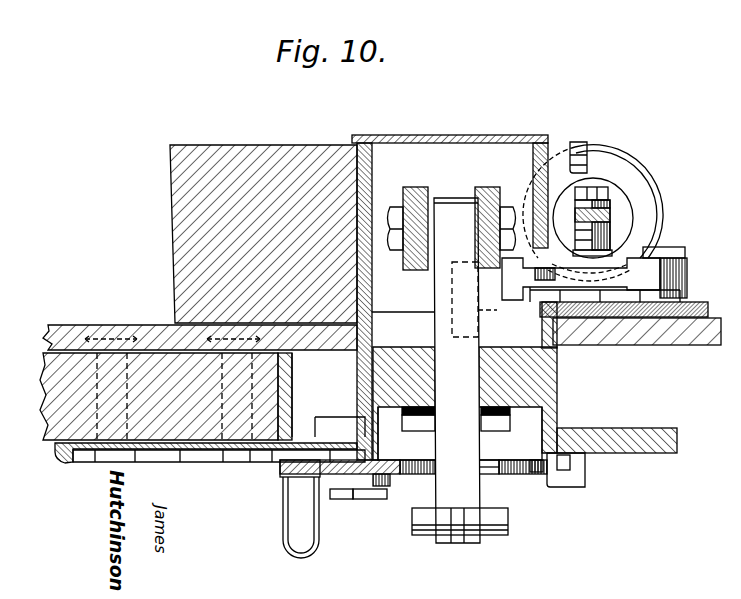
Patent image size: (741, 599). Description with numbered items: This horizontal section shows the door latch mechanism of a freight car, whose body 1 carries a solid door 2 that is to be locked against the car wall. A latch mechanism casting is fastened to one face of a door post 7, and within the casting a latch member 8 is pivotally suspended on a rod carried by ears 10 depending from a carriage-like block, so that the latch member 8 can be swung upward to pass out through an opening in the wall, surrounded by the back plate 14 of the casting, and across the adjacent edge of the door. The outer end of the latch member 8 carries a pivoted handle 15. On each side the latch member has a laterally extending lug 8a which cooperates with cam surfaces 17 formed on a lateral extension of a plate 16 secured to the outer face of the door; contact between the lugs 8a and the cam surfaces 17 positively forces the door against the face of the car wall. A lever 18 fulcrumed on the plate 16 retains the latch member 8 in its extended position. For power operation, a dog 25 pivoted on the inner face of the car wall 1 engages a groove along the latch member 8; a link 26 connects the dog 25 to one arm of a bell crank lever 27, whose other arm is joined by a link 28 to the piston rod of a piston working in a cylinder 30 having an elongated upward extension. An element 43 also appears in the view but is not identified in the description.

The body of the freight car 1 is at (62, 333).
The solid door 2 is at (188, 451).
The door post 7 is at (226, 145).
The latch member 8 is at (457, 370).
The laterally extending lug 8a is at (413, 424).
The ears 10 is at (416, 189).
The back plate 14 is at (468, 135).
The handle 15 is at (426, 530).
The plate 16 is at (275, 452).
The cam surfaces 17 is at (556, 390).
The lever 18 is at (290, 509).
The dog 25 is at (477, 299).
The link 26 is at (622, 262).
The bell crank lever 27 is at (687, 262).
The link 28 is at (610, 241).
The cylinder 30 is at (663, 203).
The clamp bolt 43 is at (610, 203).